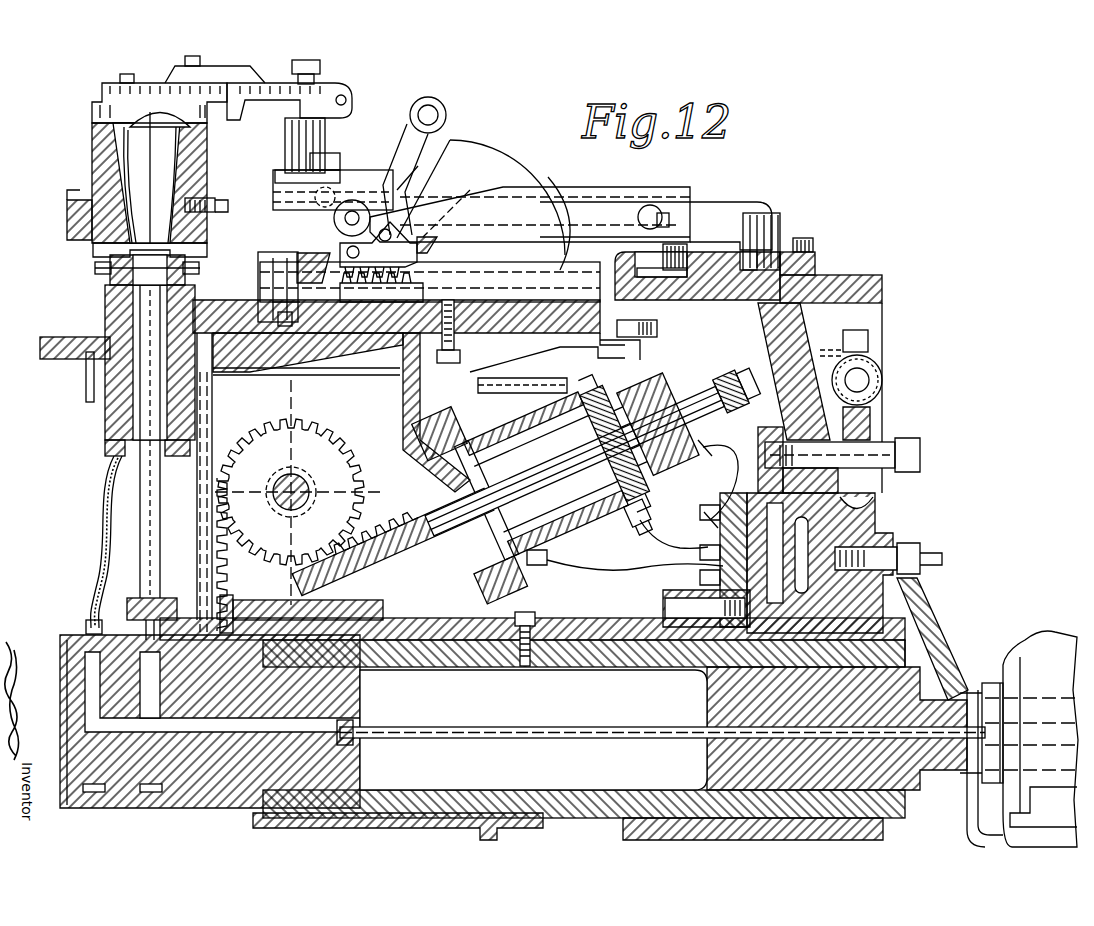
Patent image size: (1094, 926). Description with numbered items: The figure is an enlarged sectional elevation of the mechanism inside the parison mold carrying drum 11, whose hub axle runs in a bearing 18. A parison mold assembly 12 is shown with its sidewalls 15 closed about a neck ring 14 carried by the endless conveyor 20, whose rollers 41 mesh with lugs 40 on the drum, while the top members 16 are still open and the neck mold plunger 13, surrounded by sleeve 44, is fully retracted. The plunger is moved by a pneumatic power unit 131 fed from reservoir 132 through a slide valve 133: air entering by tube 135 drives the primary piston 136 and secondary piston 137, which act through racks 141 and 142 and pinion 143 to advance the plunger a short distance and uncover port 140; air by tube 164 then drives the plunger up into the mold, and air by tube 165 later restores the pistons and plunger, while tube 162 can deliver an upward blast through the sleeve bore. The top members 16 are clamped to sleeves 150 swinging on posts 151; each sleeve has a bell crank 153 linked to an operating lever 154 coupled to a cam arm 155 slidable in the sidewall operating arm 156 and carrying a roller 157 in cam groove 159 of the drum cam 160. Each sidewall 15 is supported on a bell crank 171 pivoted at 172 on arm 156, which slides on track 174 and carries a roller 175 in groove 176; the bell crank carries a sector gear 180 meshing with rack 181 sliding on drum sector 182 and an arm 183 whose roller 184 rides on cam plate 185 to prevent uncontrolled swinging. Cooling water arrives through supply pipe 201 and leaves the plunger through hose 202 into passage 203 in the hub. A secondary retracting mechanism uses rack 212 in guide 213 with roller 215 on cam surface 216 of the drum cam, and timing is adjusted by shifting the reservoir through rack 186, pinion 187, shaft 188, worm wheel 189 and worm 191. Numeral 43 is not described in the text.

The drum 11 is at (45, 348).
The parison mold assembly 12 is at (88, 188).
The neck mold plunger 13 is at (120, 392).
The neck ring 14 is at (95, 268).
The sidewall 15 is at (95, 155).
The top member 16 is at (100, 112).
The bearing 18 is at (1030, 642).
The endless conveyor 20 is at (95, 288).
The lug 40 is at (278, 318).
The roller 41 is at (270, 292).
The collar 43 is at (105, 306).
The sleeve 44 is at (140, 362).
The pneumatic power unit 131 is at (598, 515).
The reservoir 132 is at (878, 504).
The slide valve 133 is at (752, 479).
The tube 135 is at (718, 442).
The primary piston 136 is at (645, 375).
The secondary piston 137 is at (592, 426).
The port 140 is at (636, 508).
The rack 141 is at (438, 524).
The rack 142 is at (215, 515).
The pinion 143 is at (262, 445).
The sleeve 150 is at (325, 150).
The post 151 is at (318, 62).
The bell crank 153 is at (300, 178).
The operating lever 154 is at (466, 200).
The cam arm 155 is at (717, 208).
The mold sidewall operating arm 156 is at (622, 198).
The roller 157 is at (762, 262).
The cam groove 159 is at (752, 265).
The drum cam 160 is at (843, 282).
The tube 162 is at (86, 398).
The tube 164 is at (700, 543).
The tube 165 is at (587, 562).
The bell crank 171 is at (248, 208).
The pivot 172 is at (373, 210).
The track 174 is at (557, 215).
The roller 175 is at (668, 278).
The groove 176 is at (722, 286).
The sector gear 180 is at (380, 225).
The rack 181 is at (455, 272).
The drum sector 182 is at (298, 300).
The arm 183 is at (392, 150).
The roller 184 is at (440, 106).
The cam plate 185 is at (455, 150).
The rack 186 is at (872, 488).
The pinion 187 is at (770, 430).
The shaft 188 is at (830, 447).
The worm wheel 189 is at (868, 412).
The worm 191 is at (872, 372).
The water supply pipe 201 is at (515, 722).
The hose 202 is at (108, 518).
The passage 203 is at (75, 724).
The rack 212 is at (480, 384).
The guide 213 is at (530, 375).
The roller 215 is at (620, 343).
The cam surface 216 is at (655, 319).